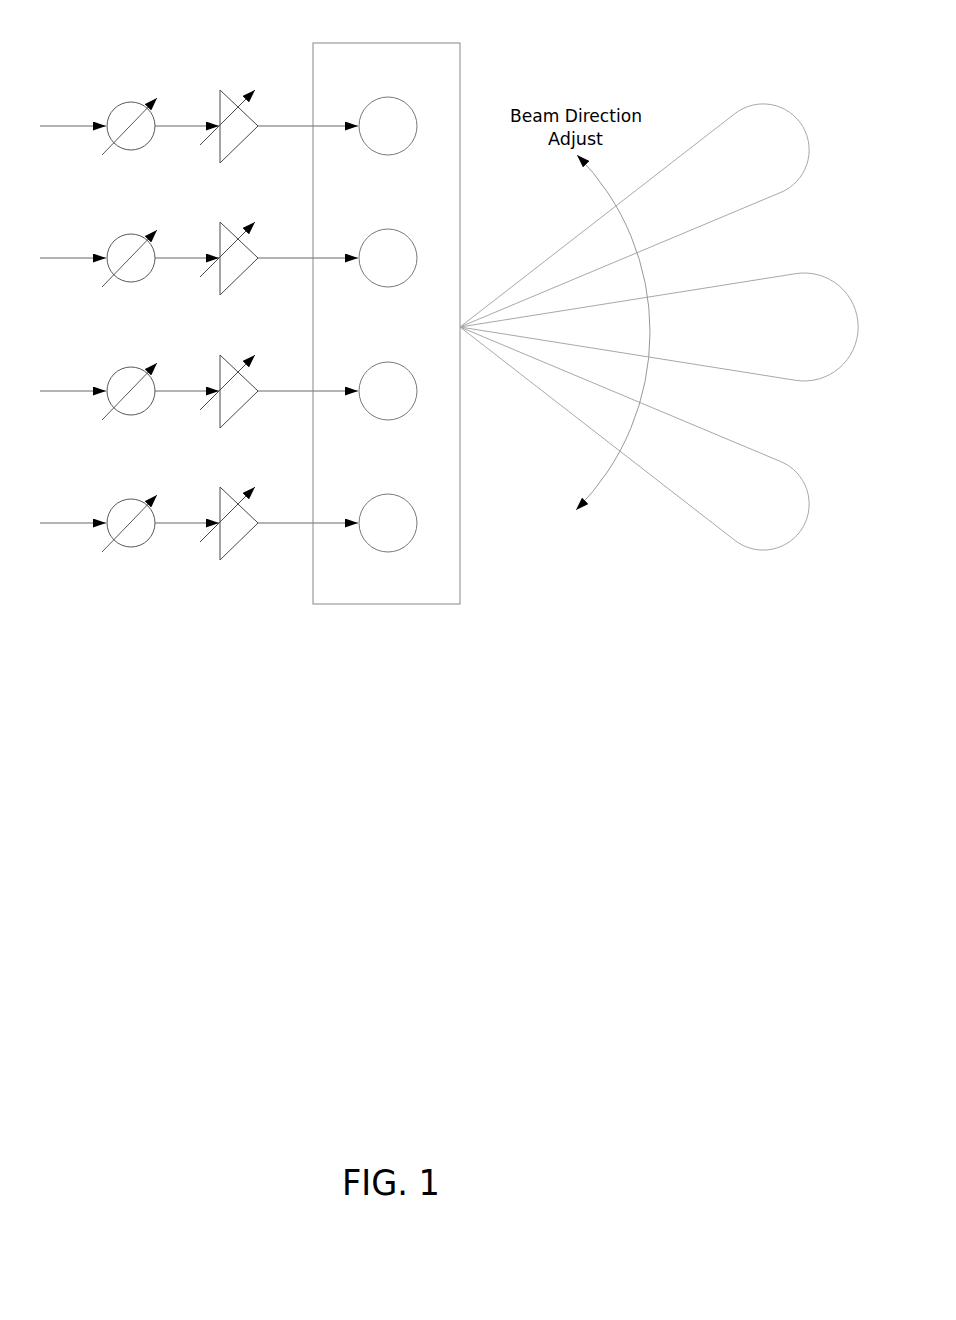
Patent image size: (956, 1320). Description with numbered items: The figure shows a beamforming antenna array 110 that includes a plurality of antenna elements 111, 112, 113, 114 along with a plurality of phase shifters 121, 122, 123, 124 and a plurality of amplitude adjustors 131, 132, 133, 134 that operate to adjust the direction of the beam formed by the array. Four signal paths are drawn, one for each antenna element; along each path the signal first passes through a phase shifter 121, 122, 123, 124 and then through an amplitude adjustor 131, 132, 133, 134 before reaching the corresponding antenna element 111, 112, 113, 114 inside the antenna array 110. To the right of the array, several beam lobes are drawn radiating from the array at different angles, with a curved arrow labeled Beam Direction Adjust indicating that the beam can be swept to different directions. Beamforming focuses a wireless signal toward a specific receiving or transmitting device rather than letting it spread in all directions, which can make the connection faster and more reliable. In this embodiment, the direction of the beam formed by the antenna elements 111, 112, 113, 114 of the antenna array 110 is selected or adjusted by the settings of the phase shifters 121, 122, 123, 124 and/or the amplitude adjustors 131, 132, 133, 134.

The antenna array 110 is at (386, 323).
The antenna element 111 is at (388, 126).
The antenna element 112 is at (388, 258).
The antenna element 113 is at (388, 391).
The antenna element 114 is at (388, 523).
The phase shifter 121 is at (118, 110).
The phase shifter 122 is at (118, 242).
The phase shifter 123 is at (118, 375).
The phase shifter 124 is at (118, 507).
The amplitude adjustor 131 is at (220, 100).
The amplitude adjustor 132 is at (220, 232).
The amplitude adjustor 133 is at (220, 365).
The amplitude adjustor 134 is at (220, 497).